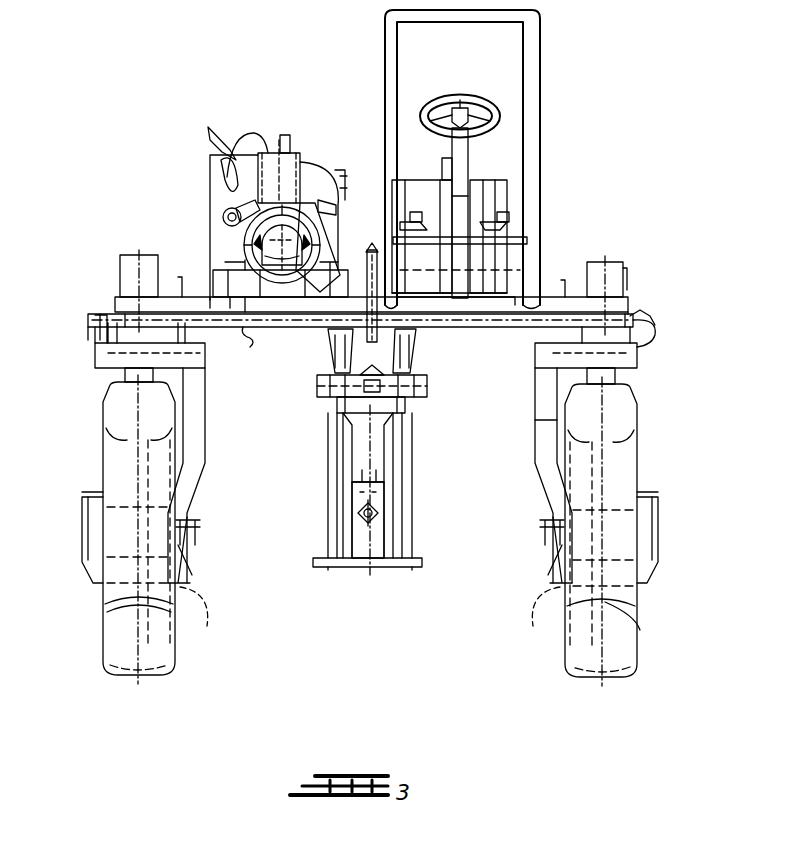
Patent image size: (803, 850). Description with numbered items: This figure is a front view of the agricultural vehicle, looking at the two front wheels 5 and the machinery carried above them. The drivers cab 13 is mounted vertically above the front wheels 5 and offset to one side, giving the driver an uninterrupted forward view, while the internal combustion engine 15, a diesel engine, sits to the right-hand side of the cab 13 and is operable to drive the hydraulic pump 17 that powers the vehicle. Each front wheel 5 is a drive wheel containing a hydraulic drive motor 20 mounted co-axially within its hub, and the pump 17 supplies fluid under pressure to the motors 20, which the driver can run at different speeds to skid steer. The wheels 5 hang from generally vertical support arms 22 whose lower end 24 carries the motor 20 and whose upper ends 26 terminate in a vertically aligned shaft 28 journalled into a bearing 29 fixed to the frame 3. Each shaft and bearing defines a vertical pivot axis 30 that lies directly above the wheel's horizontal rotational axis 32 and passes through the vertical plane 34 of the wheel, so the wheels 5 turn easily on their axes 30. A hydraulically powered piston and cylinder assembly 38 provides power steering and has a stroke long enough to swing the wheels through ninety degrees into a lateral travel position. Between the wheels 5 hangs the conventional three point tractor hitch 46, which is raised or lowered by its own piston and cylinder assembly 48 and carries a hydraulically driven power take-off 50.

The rear frame 3 is at (553, 298).
The front wheels 5 is at (160, 652).
The drivers cab 13 is at (520, 151).
The internal combustion engine 15 is at (213, 203).
The hydraulic pump 17 is at (262, 242).
The hydraulic drive motor 20 is at (431, 617).
The support arms 22 is at (203, 478).
The lower end 24 is at (202, 543).
The upper ends 26 is at (645, 358).
The shaft 28 is at (95, 356).
The bearing 29 is at (624, 270).
The pivot axis 30 is at (121, 281).
The rotational axes 32 is at (100, 540).
The vertical plane 34 is at (105, 612).
The piston and cylinder assembly 38 is at (252, 348).
The three point tractor hitch 46 is at (356, 580).
The piston and cylinder assembly 48 is at (328, 345).
The power take-off 50 is at (383, 512).